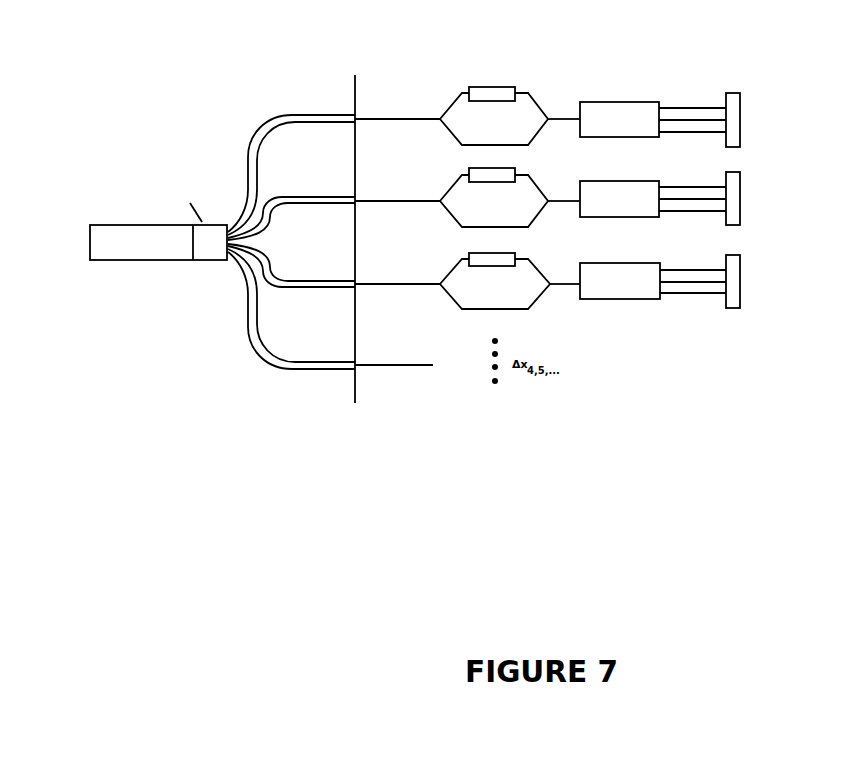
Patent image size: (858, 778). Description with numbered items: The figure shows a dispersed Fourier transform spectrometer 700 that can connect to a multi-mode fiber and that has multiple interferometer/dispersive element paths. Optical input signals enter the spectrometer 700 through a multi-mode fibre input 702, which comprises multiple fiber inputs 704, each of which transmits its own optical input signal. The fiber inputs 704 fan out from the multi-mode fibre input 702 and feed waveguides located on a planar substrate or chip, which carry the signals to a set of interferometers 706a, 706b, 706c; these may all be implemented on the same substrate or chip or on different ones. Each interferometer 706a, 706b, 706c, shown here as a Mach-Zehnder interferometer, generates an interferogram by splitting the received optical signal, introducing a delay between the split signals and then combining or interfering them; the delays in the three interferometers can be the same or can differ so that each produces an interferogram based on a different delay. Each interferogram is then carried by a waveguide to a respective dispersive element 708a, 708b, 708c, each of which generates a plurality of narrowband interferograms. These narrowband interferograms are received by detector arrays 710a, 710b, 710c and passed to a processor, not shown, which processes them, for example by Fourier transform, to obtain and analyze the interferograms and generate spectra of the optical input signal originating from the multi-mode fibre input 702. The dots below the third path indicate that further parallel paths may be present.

The spectrometer 700 is at (233, 389).
The multi-mode fibre input 702 is at (117, 223).
The fiber inputs 704 is at (325, 118).
The interferometer 706a is at (527, 95).
The interferometer 706b is at (537, 183).
The interferometer 706c is at (542, 269).
The dispersive element 708a is at (627, 122).
The dispersive element 708b is at (628, 195).
The dispersive element 708c is at (640, 276).
The detector array 710a is at (733, 108).
The detector array 710b is at (732, 187).
The detector array 710c is at (732, 269).